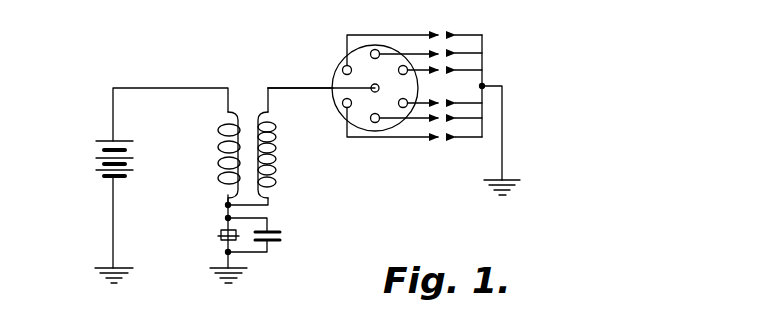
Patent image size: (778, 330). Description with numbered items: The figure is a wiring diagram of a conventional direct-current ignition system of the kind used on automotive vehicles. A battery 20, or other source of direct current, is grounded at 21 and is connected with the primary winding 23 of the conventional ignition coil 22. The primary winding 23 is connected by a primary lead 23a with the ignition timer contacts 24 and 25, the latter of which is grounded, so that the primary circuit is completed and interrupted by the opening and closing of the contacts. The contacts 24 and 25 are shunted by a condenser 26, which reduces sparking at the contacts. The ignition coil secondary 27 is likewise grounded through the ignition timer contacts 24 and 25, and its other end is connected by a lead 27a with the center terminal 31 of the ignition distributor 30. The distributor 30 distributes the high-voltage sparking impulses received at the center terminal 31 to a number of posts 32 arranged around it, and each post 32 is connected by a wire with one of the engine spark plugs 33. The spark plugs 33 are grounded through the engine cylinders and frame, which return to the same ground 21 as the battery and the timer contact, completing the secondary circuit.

The battery 20 is at (90, 158).
The ground 21 is at (105, 280).
The ignition coil 22 is at (239, 124).
The primary winding 23 is at (218, 148).
The primary lead 23a is at (225, 208).
The ignition timer contact 24 is at (220, 236).
The ignition timer contact 25 is at (224, 252).
The condenser 26 is at (283, 236).
The ignition coil secondary 27 is at (277, 152).
The lead 27a is at (290, 88).
The ignition distributor 30 is at (371, 104).
The center terminal 31 is at (383, 75).
The posts 32 is at (345, 66).
The engine spark plugs 33 is at (452, 36).